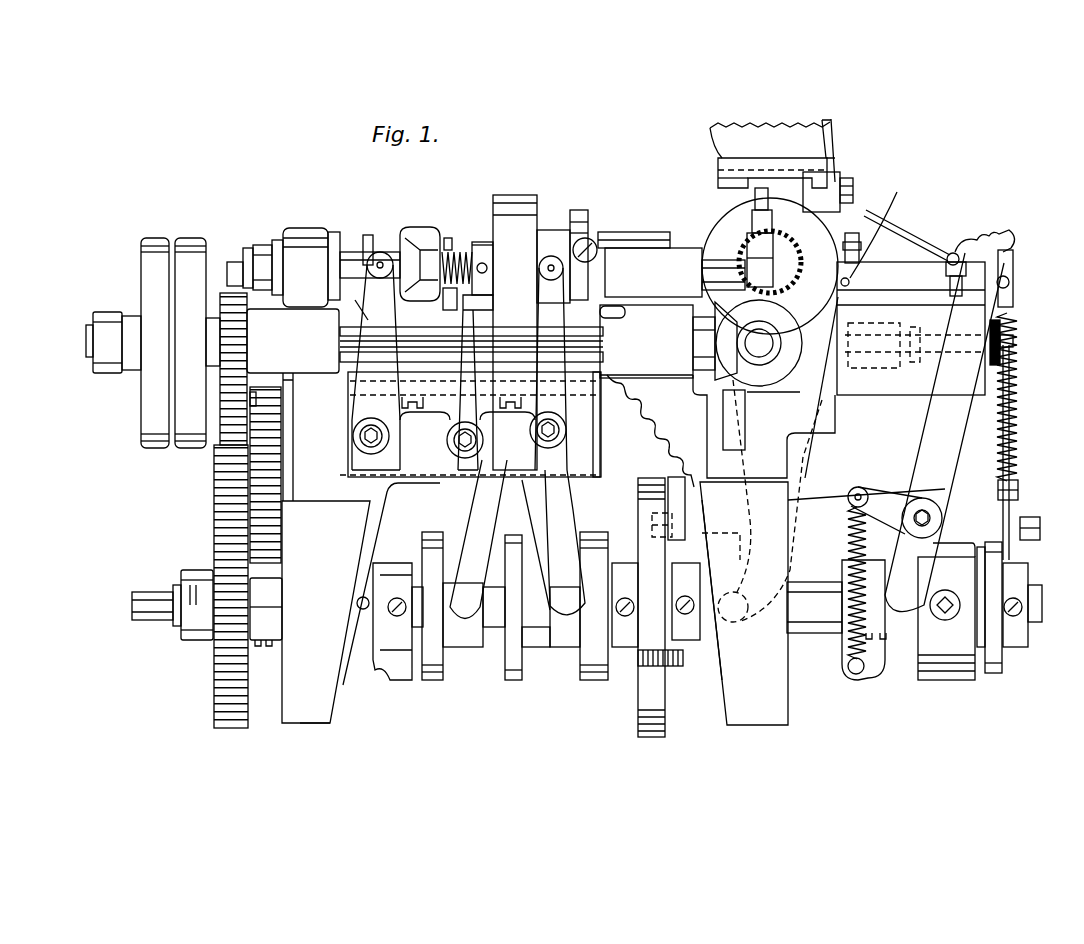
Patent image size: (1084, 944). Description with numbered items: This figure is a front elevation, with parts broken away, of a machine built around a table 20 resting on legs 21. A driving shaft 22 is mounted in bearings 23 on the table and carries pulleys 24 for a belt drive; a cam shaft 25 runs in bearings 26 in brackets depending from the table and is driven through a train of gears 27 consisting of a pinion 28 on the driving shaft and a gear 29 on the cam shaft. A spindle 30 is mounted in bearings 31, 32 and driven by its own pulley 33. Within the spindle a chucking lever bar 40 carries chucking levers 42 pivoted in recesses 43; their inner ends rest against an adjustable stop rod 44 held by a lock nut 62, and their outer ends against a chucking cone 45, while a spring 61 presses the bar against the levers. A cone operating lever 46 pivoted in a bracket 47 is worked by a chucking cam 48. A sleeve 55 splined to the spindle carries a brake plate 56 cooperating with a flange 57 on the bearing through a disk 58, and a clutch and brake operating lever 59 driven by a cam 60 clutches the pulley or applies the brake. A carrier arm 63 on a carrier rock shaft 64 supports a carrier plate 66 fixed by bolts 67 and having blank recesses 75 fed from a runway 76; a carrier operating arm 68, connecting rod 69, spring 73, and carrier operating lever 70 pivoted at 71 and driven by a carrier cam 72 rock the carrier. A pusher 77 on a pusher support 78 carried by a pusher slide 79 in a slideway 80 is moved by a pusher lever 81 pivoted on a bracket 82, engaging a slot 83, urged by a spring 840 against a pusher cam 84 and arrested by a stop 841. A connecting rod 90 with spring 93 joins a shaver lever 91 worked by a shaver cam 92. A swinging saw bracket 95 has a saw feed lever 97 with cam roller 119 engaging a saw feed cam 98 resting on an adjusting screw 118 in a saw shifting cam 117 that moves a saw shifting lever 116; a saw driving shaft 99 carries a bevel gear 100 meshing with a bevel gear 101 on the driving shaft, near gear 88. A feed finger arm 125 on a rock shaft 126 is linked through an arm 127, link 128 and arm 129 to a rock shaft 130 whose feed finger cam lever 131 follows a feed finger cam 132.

The table 20 is at (314, 492).
The legs 21 is at (312, 724).
The driving shaft 22 is at (90, 343).
The bearings 23 is at (303, 373).
The pulleys 24 is at (183, 450).
The cam shaft 25 is at (132, 607).
The bearings 26 is at (276, 612).
The train of gears 27 is at (248, 520).
The pinion 28 is at (243, 325).
The gear 29 is at (214, 693).
The spindle 30 is at (350, 252).
The bearing 31 is at (300, 230).
The bearing 32 is at (640, 232).
The pulley 33 is at (515, 200).
The chucking lever bar 40 is at (448, 240).
The chucking levers 42 is at (420, 236).
The recesses 43 is at (458, 252).
The stop rod 44 is at (240, 258).
The chucking cone 45 is at (380, 251).
The cone operating lever 46 is at (366, 310).
The bracket 47 is at (425, 415).
The chucking cam 48 is at (367, 672).
The sleeve 55 is at (540, 240).
The brake plate 56 is at (574, 215).
The flange 57 is at (590, 215).
The disk 58 is at (578, 212).
The clutch and brake operating lever 59 is at (550, 285).
The cam 60 is at (592, 679).
The spring 61 is at (480, 245).
The lock nut 62 is at (262, 245).
The carrier arm 63 is at (880, 257).
The carrier rock shaft 64 is at (935, 352).
The carrier plate 66 is at (722, 162).
The bolts 67 is at (848, 186).
The carrier operating arm 68 is at (998, 323).
The connecting rod 69 is at (988, 383).
The carrier operating lever 70 is at (1018, 489).
The pivot 71 is at (1040, 528).
The carrier cam 72 is at (1003, 655).
The spring 73 is at (1013, 413).
The blank recesses 75 is at (722, 182).
The runway 76 is at (812, 137).
The pusher 77 is at (920, 236).
The pusher support 78 is at (992, 245).
The pusher slide 79 is at (960, 252).
The slideway 80 is at (923, 293).
The pusher lever 81 is at (935, 438).
The bracket 82 is at (956, 492).
The slot 83 is at (1006, 246).
The pusher cam 84 is at (940, 681).
The gear 88 is at (775, 297).
The connecting rod 90 is at (450, 304).
The shaver lever 91 is at (450, 493).
The shaver cam 92 is at (440, 681).
The spring 93 is at (482, 306).
The swinging saw bracket 95 is at (720, 233).
The saw feed lever 97 is at (800, 458).
The saw feed cam 98 is at (722, 680).
The saw driving shaft 99 is at (766, 348).
The bevel gear 100 is at (763, 378).
The bevel gear 101 is at (728, 338).
The saw shifting lever 116 is at (680, 510).
The saw shifting cam 117 is at (640, 708).
The adjusting screw 118 is at (682, 668).
The cam roller 119 is at (740, 618).
The feed finger arm 125 is at (752, 225).
The rock shaft 126 is at (690, 268).
The arm 127 is at (590, 241).
The link 128 is at (603, 309).
The arm 129 is at (588, 418).
The rock shaft 130 is at (601, 460).
The feed finger cam lever 131 is at (510, 518).
The feed finger cam 132 is at (513, 681).
The spring 840 is at (850, 546).
The stop 841 is at (890, 227).